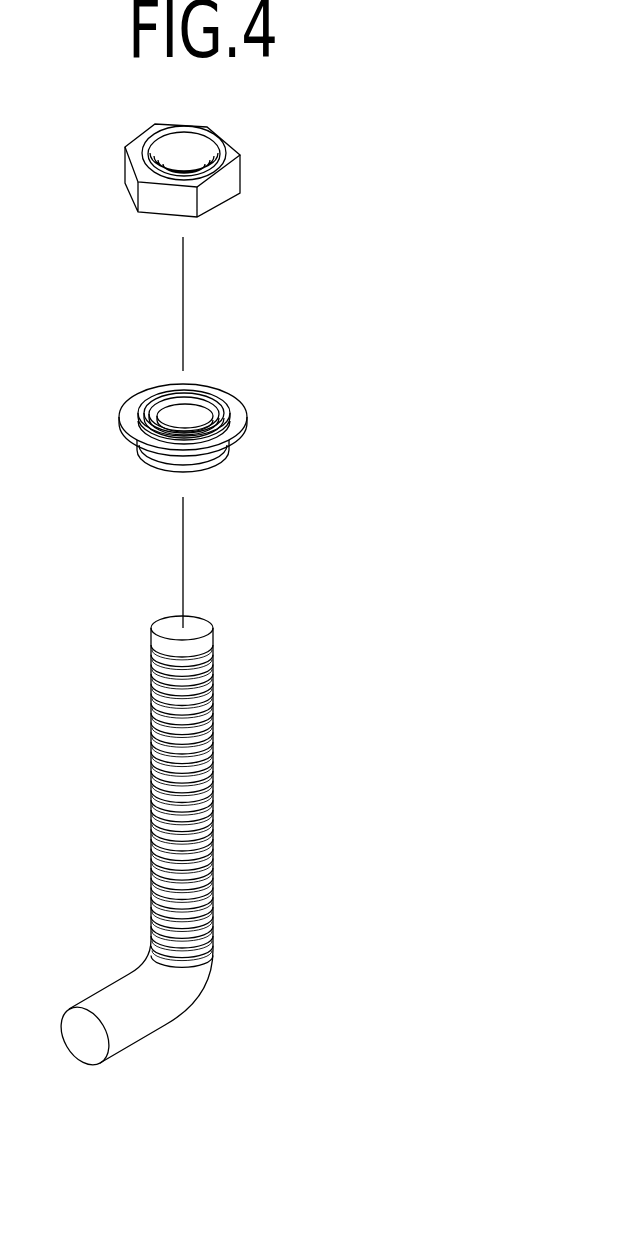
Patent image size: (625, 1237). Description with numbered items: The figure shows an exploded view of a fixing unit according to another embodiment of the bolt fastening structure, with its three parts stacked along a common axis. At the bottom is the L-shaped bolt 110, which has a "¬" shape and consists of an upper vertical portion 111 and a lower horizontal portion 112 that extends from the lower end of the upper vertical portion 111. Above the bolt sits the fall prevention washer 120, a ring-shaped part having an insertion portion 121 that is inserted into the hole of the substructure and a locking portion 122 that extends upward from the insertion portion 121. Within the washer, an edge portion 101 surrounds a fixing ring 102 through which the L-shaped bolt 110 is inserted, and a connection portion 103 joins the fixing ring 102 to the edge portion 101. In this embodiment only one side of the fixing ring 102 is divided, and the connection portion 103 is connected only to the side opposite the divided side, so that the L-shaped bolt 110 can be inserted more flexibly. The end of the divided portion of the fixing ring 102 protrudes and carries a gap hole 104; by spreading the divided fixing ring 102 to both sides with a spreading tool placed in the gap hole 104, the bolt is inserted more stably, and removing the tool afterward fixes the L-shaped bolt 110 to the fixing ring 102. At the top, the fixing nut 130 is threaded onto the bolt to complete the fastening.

The fixing nut 130 is at (240, 177).
The fall prevention washer 120 is at (210, 417).
The locking portion 122 is at (247, 424).
The insertion portion 121 is at (207, 459).
The edge portion 101 is at (238, 423).
The fixing ring 102 is at (200, 389).
The connection portion 103 is at (217, 403).
The gap hole 104 is at (167, 381).
The L-shaped bolt 110 is at (154, 801).
The upper vertical portion 111 is at (150, 860).
The lower horizontal portion 112 is at (157, 1022).